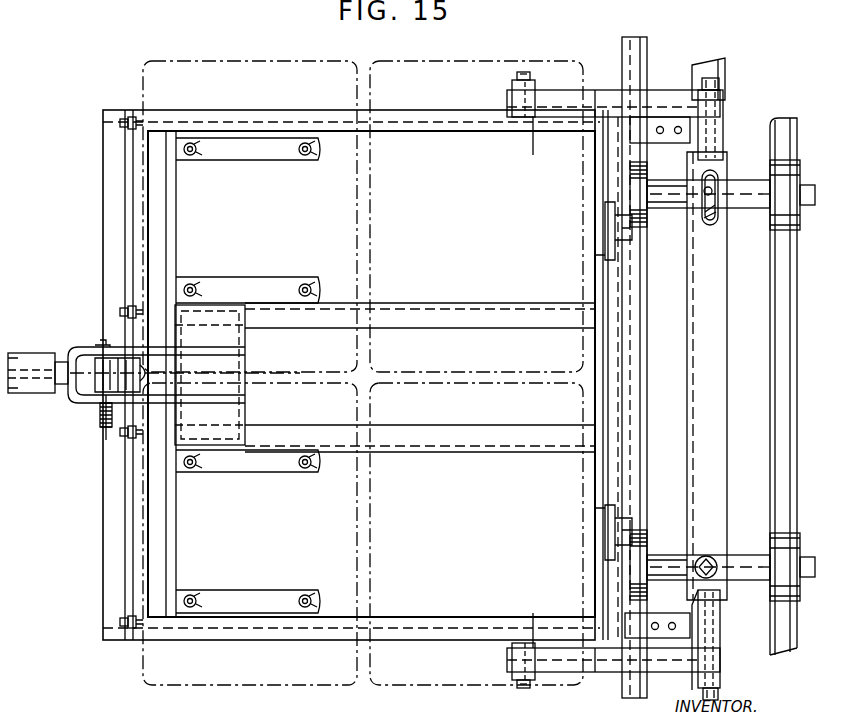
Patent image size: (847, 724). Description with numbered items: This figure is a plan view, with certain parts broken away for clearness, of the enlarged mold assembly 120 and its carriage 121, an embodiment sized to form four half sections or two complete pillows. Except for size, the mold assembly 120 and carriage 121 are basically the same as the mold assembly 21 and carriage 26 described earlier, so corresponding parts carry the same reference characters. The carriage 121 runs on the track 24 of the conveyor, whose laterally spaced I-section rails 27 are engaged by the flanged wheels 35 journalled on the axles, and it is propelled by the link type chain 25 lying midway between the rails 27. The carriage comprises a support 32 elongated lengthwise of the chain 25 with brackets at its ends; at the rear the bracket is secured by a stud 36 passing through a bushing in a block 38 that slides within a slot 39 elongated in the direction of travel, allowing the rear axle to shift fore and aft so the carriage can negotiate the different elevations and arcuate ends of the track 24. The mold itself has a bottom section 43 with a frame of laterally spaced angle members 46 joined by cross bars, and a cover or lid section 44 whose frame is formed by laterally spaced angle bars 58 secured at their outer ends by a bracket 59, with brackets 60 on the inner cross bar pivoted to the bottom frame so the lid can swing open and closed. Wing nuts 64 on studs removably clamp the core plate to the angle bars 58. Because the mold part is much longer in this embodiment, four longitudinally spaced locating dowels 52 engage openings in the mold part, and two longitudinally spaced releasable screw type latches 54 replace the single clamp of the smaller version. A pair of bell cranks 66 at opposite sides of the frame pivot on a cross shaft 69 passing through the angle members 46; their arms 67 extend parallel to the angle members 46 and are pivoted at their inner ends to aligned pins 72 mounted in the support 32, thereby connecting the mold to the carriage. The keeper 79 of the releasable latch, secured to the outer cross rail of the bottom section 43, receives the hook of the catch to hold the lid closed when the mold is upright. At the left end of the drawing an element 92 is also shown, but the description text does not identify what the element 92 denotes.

The mold assembly 21 is at (782, 130).
The track 24 is at (660, 78).
The link type chain 25 is at (734, 85).
The carriage 26 is at (667, 548).
The rails 27 is at (640, 65).
The support 32 is at (706, 296).
The flanged wheels 35 is at (636, 180).
The stud 36 is at (706, 189).
The block 38 is at (708, 212).
The slot 39 is at (710, 215).
The bottom section 43 is at (372, 295).
The cover or lid section 44 is at (450, 136).
The angle members 46 is at (535, 138).
The locating dowels 52 is at (140, 123).
The screw type latch 54 is at (618, 228).
The angle bars 58 is at (240, 285).
The bracket 59 is at (240, 415).
The brackets 60 is at (716, 134).
The wing nuts 64 is at (194, 157).
The bell cranks 66 is at (506, 99).
The arms 67 is at (572, 95).
The cross shaft 69 is at (580, 64).
The pins 72 is at (709, 78).
The keeper 79 is at (92, 414).
The motor 92 is at (42, 393).
The mold assembly 120 is at (95, 542).
The carriage 121 is at (746, 166).